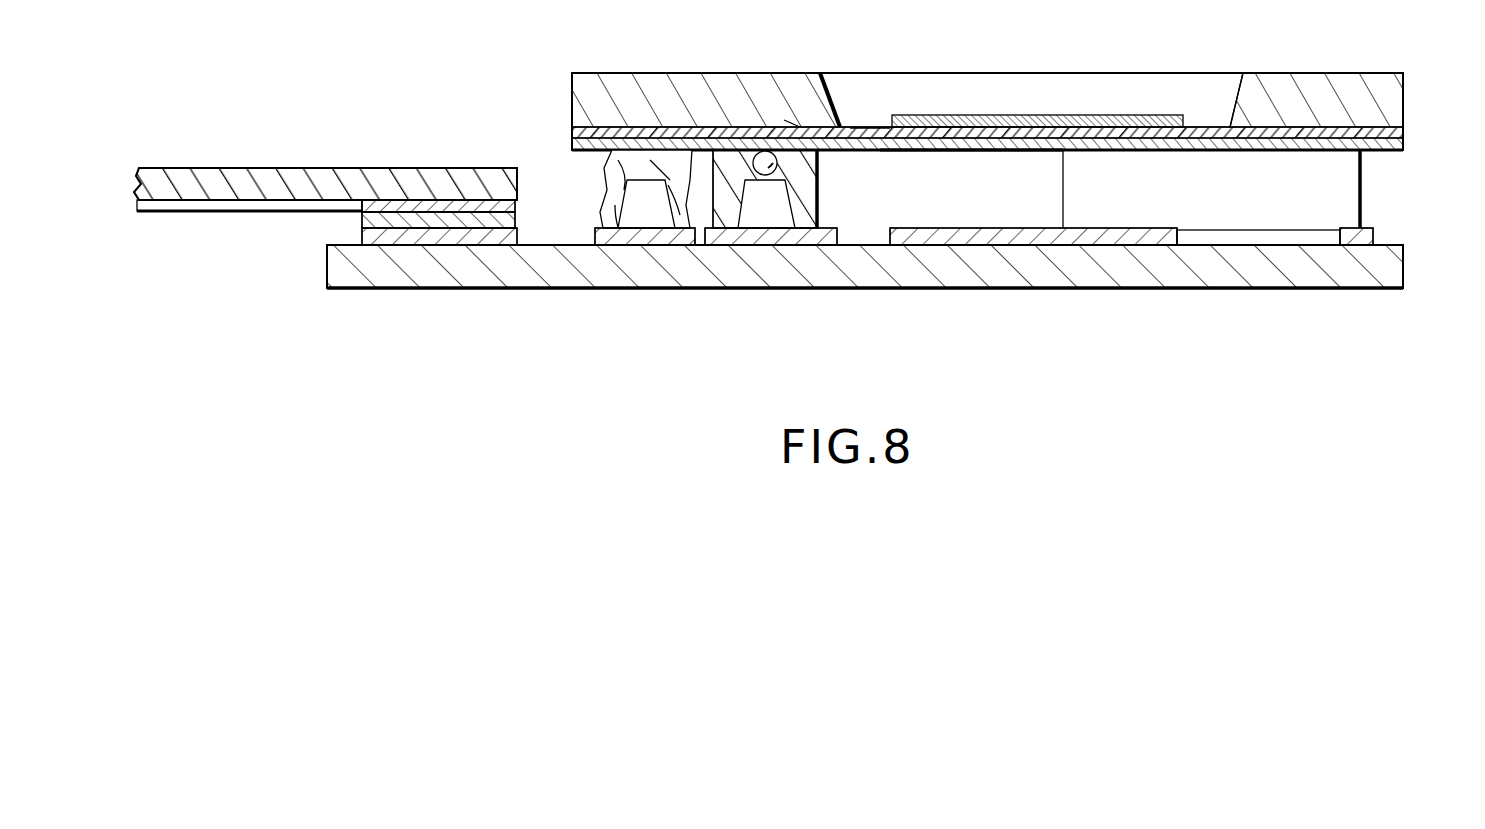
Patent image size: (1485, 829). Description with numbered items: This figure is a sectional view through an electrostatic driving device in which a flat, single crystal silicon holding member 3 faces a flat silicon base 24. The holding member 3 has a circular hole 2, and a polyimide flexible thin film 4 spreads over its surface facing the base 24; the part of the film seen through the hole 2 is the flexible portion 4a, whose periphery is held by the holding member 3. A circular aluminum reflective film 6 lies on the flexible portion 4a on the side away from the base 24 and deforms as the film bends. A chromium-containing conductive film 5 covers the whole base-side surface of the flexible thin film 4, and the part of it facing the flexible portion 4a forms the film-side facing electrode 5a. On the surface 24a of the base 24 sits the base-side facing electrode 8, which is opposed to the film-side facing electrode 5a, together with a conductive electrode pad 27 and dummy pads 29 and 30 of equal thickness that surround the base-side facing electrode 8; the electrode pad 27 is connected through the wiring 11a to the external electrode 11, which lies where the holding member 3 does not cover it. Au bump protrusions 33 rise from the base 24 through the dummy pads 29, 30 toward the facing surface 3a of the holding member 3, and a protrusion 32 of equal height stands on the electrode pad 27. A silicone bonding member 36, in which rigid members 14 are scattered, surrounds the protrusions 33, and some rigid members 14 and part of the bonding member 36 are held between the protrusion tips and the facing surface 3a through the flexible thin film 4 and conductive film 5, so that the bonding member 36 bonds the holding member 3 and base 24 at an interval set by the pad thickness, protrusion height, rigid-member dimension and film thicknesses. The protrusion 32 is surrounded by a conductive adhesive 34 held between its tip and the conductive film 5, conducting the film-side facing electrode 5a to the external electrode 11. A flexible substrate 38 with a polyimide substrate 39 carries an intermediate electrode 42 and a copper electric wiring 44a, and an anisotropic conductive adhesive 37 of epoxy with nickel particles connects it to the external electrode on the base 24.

The circular hole 2 is at (916, 97).
The holding member 3 is at (600, 83).
The facing surface 3a is at (790, 125).
The flexible thin film 4 is at (1398, 131).
The flexible portion 4a is at (866, 128).
The conductive film 5 is at (1400, 145).
The film-side facing electrode 5a is at (1022, 152).
The reflective film 6 is at (996, 118).
The base-side facing electrode 8 is at (968, 236).
The external electrode 11 is at (437, 236).
The wiring 11a is at (532, 236).
The rigid members 14 is at (777, 165).
The base 24 is at (1390, 266).
The surface 24a is at (1380, 242).
The electrode pad 27 is at (692, 222).
The dummy pad 29 is at (812, 236).
The dummy pad 30 is at (1238, 248).
The protrusion 32 is at (632, 218).
The protrusions 33 is at (745, 218).
The conductive adhesive 34 is at (615, 173).
The bonding member 36 is at (818, 200).
The anisotropic conductive adhesive 37 is at (360, 220).
The flexible substrate 38 is at (285, 160).
The polyimide substrate 39 is at (206, 190).
The intermediate electrode 42 is at (516, 204).
The electric wiring 44a is at (242, 208).